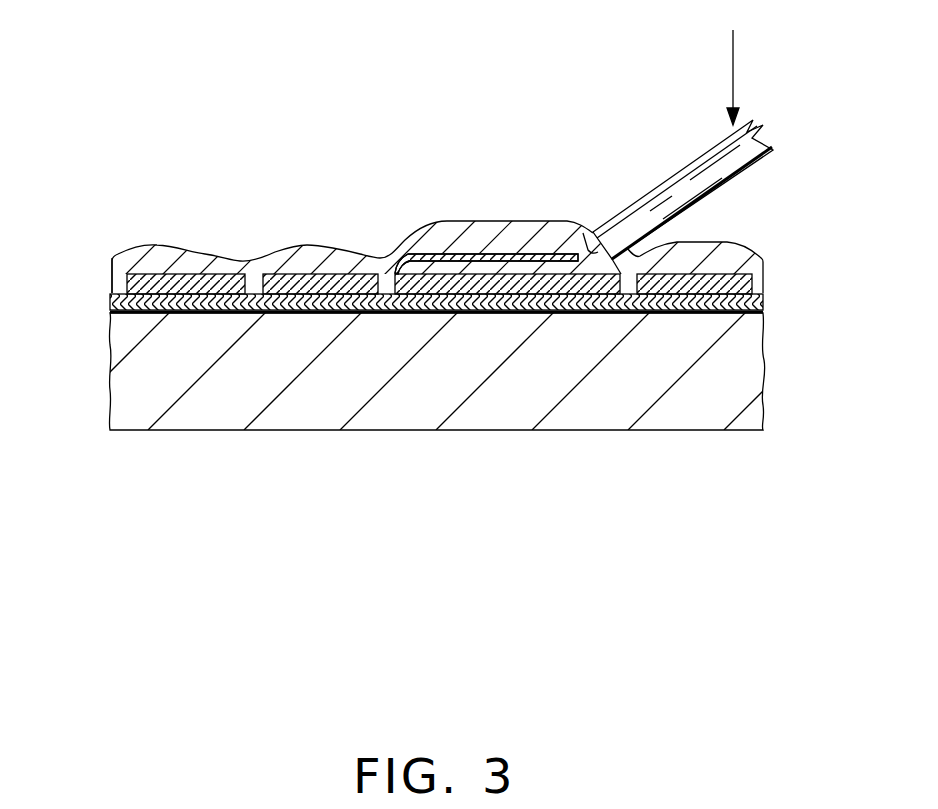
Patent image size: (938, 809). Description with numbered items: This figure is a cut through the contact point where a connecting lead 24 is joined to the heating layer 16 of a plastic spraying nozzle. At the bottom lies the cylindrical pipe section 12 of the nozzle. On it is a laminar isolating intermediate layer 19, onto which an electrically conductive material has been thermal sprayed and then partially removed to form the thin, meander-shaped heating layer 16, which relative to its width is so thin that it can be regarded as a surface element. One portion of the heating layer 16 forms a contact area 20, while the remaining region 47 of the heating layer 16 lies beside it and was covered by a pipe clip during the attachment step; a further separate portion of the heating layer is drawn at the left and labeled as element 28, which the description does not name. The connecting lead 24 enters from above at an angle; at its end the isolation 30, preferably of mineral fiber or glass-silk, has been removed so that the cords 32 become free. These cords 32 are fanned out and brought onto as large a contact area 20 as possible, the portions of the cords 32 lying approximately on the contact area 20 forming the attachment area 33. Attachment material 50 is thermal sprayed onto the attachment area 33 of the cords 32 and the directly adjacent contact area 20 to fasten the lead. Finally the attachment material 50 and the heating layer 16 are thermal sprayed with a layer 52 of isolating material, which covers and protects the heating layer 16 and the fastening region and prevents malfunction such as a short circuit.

The pipe section 12 is at (193, 430).
The isolating intermediate layer 19 is at (373, 297).
The contact area 20 is at (488, 292).
The electrode pad 28 is at (215, 274).
The layer of isolating material 52 is at (323, 257).
The attachment material 50 is at (480, 253).
The attachment area 33 is at (457, 272).
The isolation 30 is at (662, 195).
The cords 32 is at (583, 233).
The connecting lead 24 is at (733, 63).
The remaining region 47 is at (273, 230).
The heating layer 16 is at (112, 280).